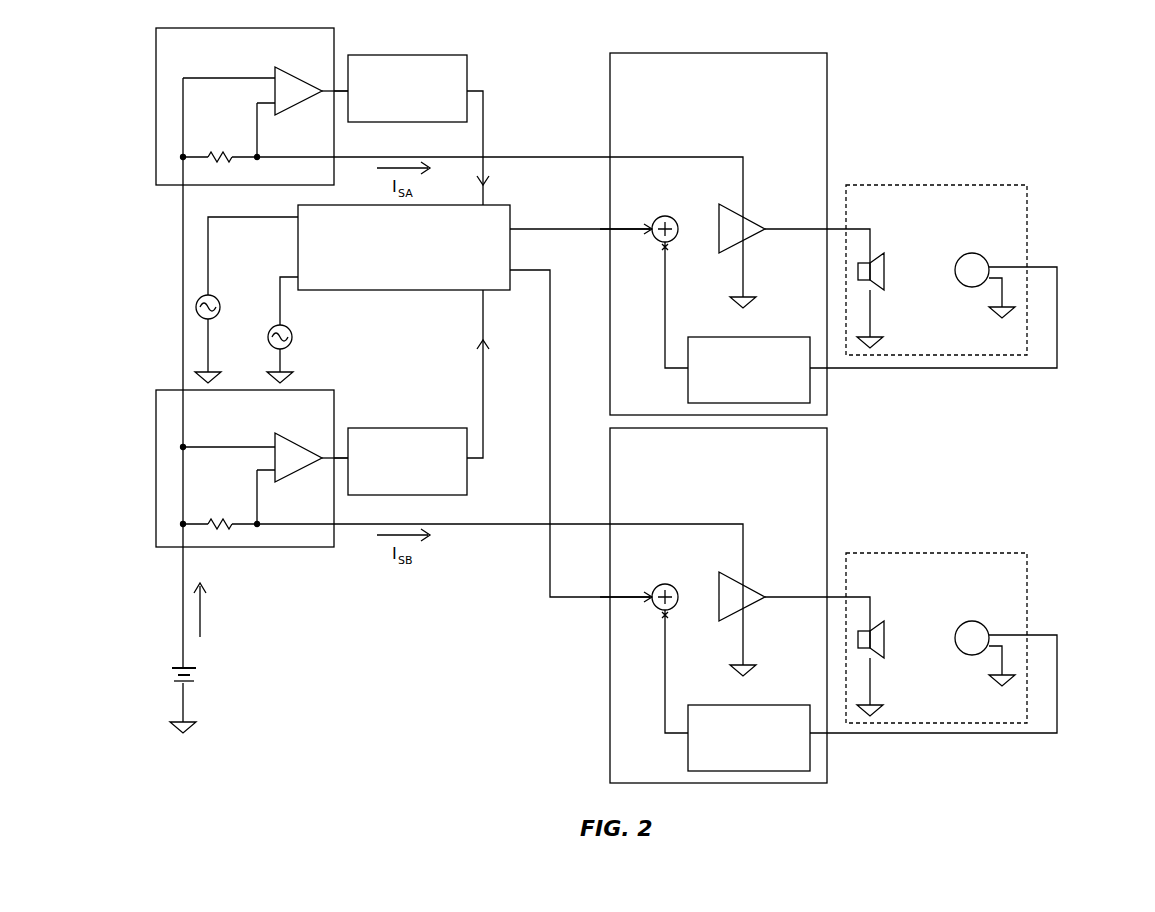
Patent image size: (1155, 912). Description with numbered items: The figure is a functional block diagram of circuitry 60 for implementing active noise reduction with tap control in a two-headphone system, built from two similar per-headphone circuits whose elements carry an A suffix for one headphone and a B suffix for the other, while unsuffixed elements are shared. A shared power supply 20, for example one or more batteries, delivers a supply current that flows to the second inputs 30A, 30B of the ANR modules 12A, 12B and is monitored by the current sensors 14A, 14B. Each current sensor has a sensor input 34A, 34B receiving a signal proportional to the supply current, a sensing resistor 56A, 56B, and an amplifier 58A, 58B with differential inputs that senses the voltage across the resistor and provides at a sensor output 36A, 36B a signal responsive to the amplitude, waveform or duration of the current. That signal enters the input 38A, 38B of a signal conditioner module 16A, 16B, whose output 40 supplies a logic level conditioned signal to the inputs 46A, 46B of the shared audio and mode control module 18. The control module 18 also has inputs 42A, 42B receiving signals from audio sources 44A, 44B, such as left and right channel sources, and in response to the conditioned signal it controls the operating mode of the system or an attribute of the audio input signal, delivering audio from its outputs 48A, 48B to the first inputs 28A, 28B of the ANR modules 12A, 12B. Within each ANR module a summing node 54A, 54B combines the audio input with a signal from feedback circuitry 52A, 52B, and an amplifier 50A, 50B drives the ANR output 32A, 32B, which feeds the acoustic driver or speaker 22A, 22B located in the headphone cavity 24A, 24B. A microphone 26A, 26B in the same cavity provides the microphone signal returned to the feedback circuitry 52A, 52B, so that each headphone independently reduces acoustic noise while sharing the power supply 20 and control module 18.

The circuitry 60 is at (1096, 170).
The power supply 20 is at (172, 670).
The current sensor 14A is at (228, 72).
The current sensor 14B is at (228, 433).
The amplifier 58A is at (285, 99).
The amplifier 58B is at (285, 466).
The sensor input 34A is at (253, 155).
The sensor input 34B is at (253, 522).
The sensing resistor 56A is at (223, 155).
The sensing resistor 56B is at (223, 522).
The sensor output 36A is at (327, 102).
The sensor output 36B is at (327, 470).
The input 38A is at (345, 87).
The input 38B is at (345, 457).
The signal conditioner module 16A is at (393, 116).
The signal conditioner module 16B is at (393, 489).
The output 40 is at (481, 88).
The input 46A is at (490, 203).
The input 46B is at (487, 293).
The audio and mode control module 18 is at (496, 269).
The input 42A is at (298, 226).
The input 42B is at (298, 268).
The audio source 44A is at (221, 304).
The audio source 44B is at (293, 337).
The output 48A is at (517, 228).
The output 48B is at (513, 270).
The first input 28A is at (609, 233).
The first input 28B is at (610, 601).
The ANR module 12A is at (706, 117).
The ANR module 12B is at (706, 483).
The second input 30A is at (610, 157).
The second input 30B is at (610, 524).
The summing node 54A is at (667, 215).
The summing node 54B is at (667, 583).
The amplifier 50A is at (751, 237).
The amplifier 50B is at (751, 605).
The feedback circuitry 52A is at (735, 402).
The feedback circuitry 52B is at (735, 768).
The ANR output 32A is at (823, 229).
The ANR output 32B is at (823, 597).
The headphone cavity 24A is at (921, 255).
The headphone cavity 24B is at (921, 623).
The acoustic driver 22A is at (886, 280).
The acoustic driver 22B is at (886, 648).
The microphone 26A is at (970, 288).
The microphone 26B is at (970, 656).